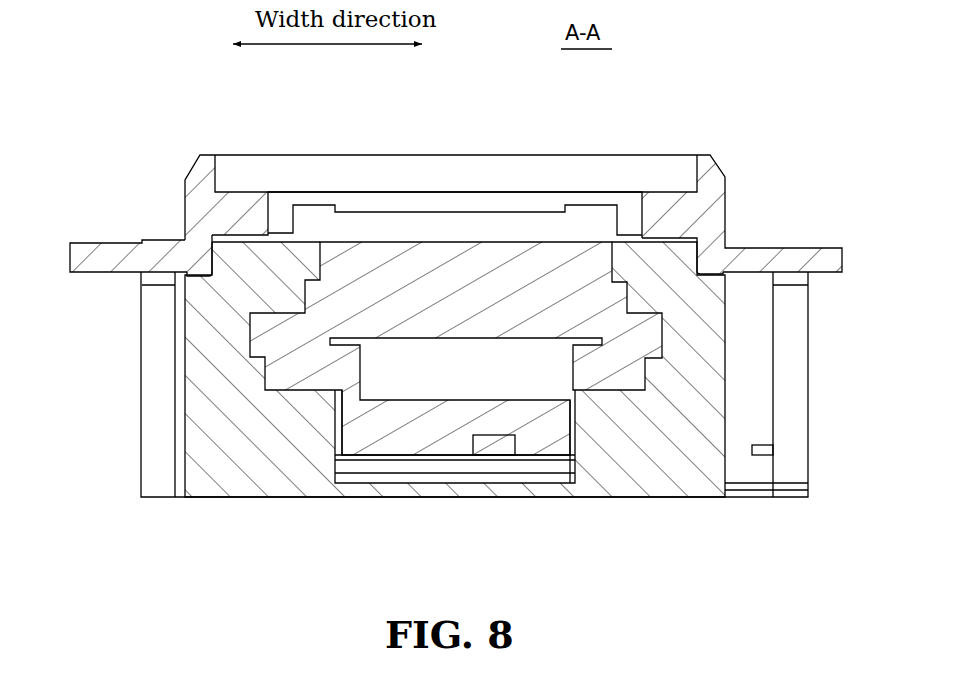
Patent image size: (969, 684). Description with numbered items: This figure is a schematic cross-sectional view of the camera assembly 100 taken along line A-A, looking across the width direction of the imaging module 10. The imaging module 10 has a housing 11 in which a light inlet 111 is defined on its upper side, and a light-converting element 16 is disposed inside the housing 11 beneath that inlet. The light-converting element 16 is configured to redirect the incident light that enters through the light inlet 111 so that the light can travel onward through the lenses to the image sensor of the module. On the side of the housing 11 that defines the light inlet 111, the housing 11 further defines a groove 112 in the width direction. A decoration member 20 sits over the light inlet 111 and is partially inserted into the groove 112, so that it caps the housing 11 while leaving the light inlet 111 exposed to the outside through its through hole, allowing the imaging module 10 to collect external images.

The camera assembly 100 is at (108, 142).
The decoration member 20 is at (710, 210).
The groove 112 is at (699, 268).
The light inlet 111 is at (475, 213).
The housing 11 is at (657, 483).
The light-converting element 16 is at (566, 260).
The imaging module 10 is at (312, 497).